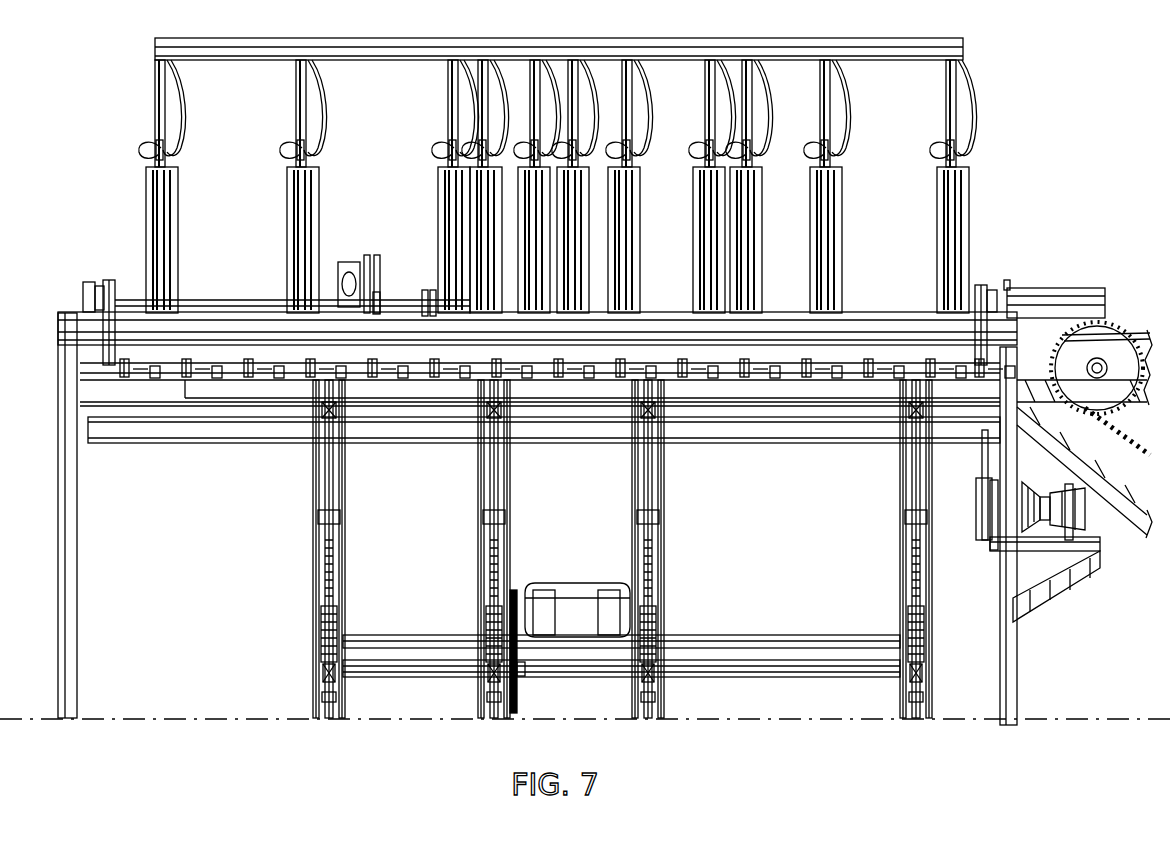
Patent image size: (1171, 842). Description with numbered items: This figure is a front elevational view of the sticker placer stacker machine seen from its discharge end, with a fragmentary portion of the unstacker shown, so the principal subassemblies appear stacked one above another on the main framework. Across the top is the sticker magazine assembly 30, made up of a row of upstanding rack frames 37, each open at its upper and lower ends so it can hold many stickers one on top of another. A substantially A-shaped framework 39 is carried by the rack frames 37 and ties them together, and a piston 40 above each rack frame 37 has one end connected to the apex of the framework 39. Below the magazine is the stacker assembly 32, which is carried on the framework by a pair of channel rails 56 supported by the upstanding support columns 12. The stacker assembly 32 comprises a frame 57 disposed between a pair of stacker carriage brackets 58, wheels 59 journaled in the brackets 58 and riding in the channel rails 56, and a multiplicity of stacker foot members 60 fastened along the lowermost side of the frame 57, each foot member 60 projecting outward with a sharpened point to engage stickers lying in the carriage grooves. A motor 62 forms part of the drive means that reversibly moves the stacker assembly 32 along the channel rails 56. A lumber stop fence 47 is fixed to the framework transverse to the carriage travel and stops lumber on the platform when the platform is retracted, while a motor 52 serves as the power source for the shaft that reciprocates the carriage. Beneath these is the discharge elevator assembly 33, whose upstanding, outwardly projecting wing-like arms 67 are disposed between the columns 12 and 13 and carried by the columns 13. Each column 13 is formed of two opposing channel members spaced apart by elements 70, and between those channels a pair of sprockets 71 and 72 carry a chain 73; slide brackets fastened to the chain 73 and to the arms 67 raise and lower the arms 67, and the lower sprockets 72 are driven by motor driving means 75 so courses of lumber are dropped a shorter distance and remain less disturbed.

The upstanding support column 12 is at (77, 570).
The upstanding support column 13 is at (314, 566).
The sticker magazine assembly 30 is at (559, 49).
The stacker assembly 32 is at (532, 342).
The discharge elevator assembly 33 is at (345, 478).
The rack frame 37 is at (178, 206).
The A-shaped framework 39 is at (150, 125).
The piston 40 is at (296, 128).
The lumber stop fence 47 is at (418, 380).
The motor 52 is at (1087, 515).
The channel rail 56 is at (83, 288).
The frame 57 is at (260, 312).
The stacker carriage bracket 58 is at (108, 280).
The wheel 59 is at (97, 286).
The stacker foot member 60 is at (165, 362).
The motor 62 is at (345, 262).
The wing-like arm 67 is at (328, 455).
The spacing element 70 is at (322, 699).
The sprocket 71 is at (334, 408).
The sprocket 72 is at (320, 674).
The chain 73 is at (325, 588).
The motor driving means 75 is at (570, 624).